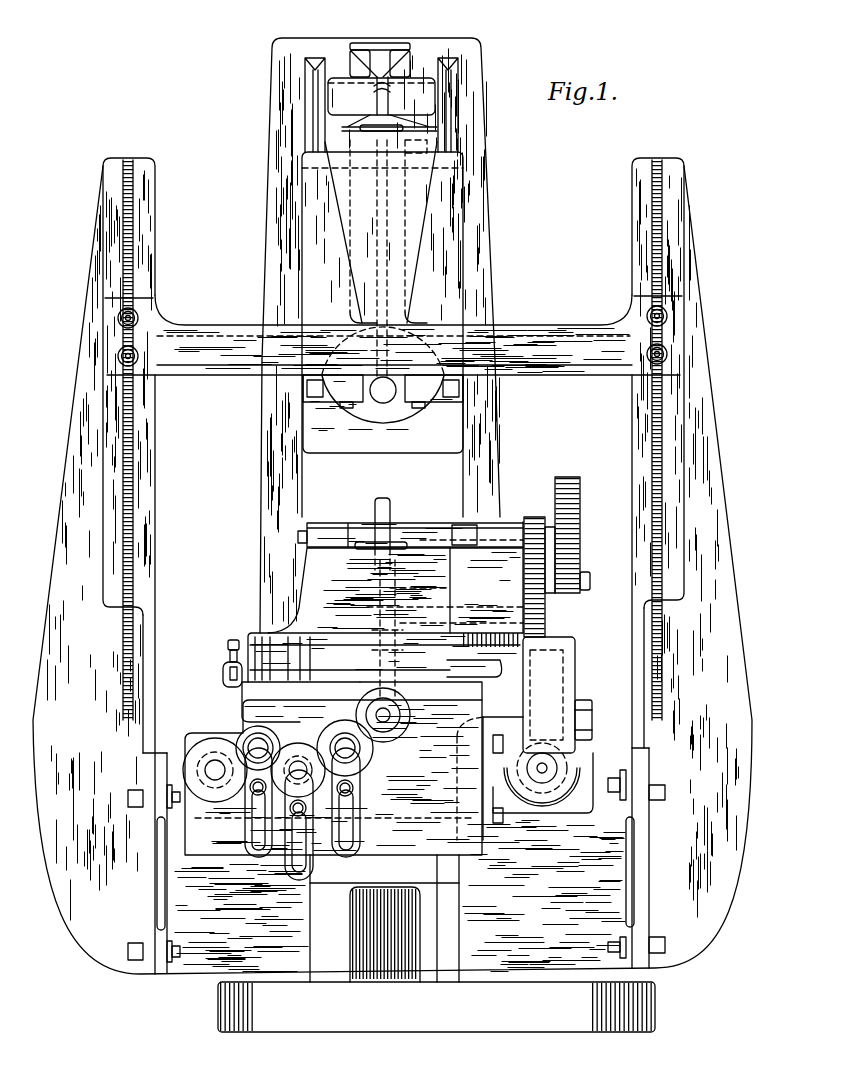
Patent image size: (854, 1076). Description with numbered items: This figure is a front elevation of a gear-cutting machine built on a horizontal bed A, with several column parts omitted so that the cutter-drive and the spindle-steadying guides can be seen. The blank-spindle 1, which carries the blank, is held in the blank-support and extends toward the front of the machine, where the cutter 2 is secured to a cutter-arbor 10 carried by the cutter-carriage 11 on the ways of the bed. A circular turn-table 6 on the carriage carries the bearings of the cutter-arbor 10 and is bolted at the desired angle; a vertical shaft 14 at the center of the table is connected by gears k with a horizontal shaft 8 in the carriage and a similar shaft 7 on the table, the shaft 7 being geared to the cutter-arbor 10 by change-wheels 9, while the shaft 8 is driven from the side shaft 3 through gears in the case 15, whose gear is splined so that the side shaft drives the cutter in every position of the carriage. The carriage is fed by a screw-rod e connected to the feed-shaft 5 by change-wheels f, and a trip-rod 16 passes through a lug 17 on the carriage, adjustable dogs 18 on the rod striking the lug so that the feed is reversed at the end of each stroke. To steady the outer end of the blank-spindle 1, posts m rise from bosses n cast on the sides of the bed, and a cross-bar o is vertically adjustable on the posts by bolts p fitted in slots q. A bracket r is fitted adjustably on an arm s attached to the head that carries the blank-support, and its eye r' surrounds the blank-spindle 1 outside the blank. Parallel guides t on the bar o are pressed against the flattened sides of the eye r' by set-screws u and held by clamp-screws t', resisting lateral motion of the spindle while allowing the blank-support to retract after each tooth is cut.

The horizontal bed A is at (462, 893).
The posts m is at (158, 460).
The bosses n is at (168, 898).
The cross-bar o is at (208, 326).
The bolts p is at (138, 362).
The slots q is at (133, 483).
The arm s is at (381, 97).
The bracket r is at (381, 232).
The eye r' is at (382, 328).
The parallel guides t is at (431, 407).
The clamp-screws t' is at (366, 432).
The set-screws u is at (437, 393).
The blank-spindle 1 is at (367, 402).
The cutter 2 is at (389, 503).
The side shaft 3 is at (552, 767).
The feed-shaft 5 is at (207, 762).
The circular turn-table 6 is at (322, 632).
The horizontal shaft on the table 7 is at (395, 577).
The horizontal shaft in the carriage 8 is at (446, 686).
The change-wheels 9 is at (548, 623).
The cutter-arbor 10 is at (298, 535).
The cutter-carriage 11 is at (304, 658).
The vertical shaft 14 is at (378, 622).
The gear case 15 is at (576, 662).
The trip-rod 16 is at (222, 674).
The lug 17 is at (238, 693).
The dogs 18 is at (228, 663).
The screw-rod e is at (388, 722).
The change-wheels f is at (222, 738).
The gears k is at (421, 670).